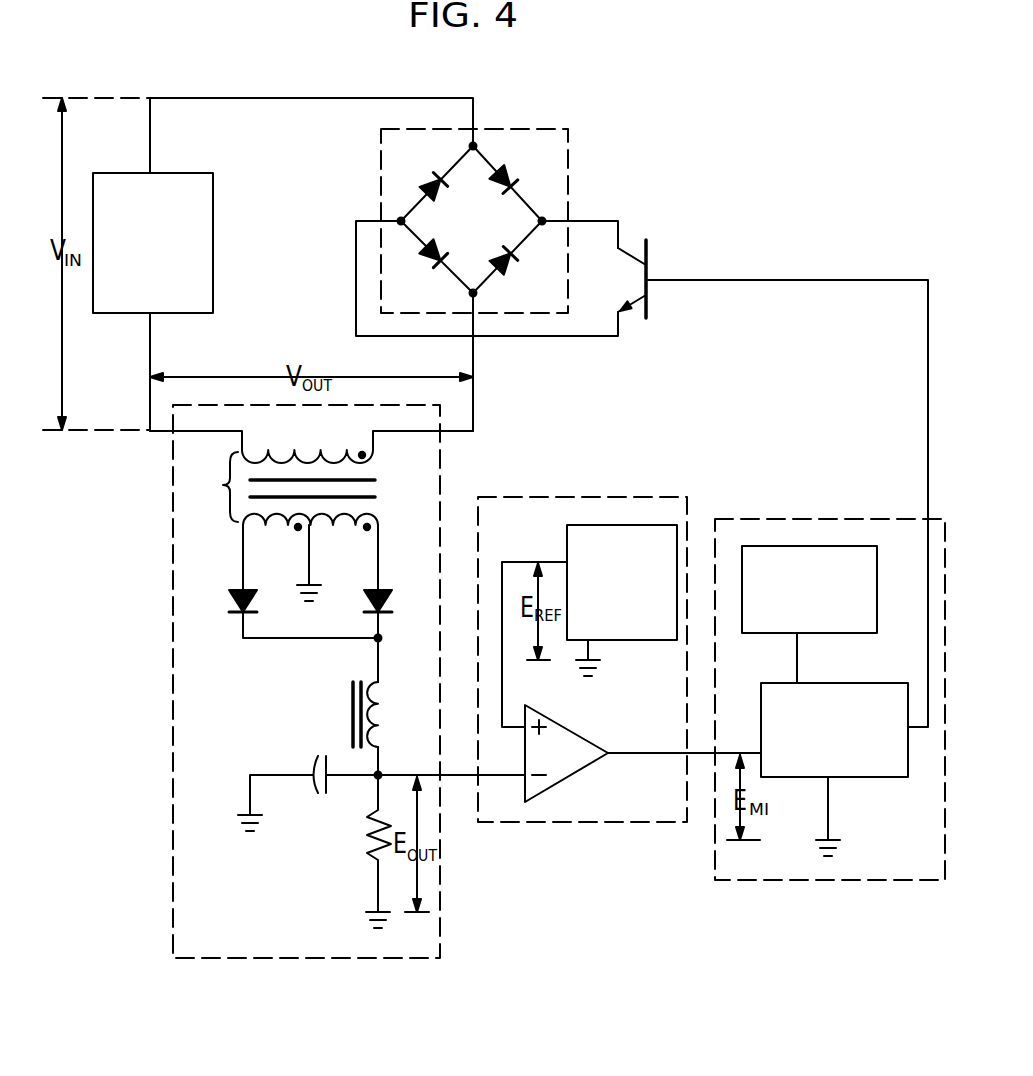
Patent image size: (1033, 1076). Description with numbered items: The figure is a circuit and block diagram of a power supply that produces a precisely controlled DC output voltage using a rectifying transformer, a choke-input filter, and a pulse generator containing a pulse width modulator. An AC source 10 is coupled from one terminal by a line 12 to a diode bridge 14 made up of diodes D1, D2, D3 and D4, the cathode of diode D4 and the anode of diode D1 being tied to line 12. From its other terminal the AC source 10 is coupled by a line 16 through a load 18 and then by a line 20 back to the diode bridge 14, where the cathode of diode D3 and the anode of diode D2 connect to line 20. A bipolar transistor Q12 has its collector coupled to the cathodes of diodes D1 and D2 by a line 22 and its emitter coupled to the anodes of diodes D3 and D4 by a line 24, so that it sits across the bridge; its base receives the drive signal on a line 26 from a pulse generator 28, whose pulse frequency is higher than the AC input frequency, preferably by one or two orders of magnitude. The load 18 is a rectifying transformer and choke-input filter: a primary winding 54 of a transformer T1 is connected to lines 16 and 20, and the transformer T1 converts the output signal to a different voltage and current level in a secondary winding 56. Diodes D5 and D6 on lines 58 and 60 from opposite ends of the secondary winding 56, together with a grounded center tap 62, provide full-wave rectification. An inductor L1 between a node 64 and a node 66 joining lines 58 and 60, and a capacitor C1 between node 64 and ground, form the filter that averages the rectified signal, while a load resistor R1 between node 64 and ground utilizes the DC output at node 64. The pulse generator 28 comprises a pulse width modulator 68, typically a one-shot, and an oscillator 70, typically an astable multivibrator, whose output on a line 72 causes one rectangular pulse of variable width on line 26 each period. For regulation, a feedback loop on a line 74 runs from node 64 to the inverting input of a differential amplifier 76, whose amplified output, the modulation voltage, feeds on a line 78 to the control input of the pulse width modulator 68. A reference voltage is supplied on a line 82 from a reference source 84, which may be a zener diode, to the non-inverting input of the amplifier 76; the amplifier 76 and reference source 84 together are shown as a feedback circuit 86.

The AC source 10 is at (153, 243).
The line 12 is at (150, 134).
The diode bridge 14 is at (474, 189).
The line 16 is at (152, 346).
The load 18 is at (172, 522).
The line 20 is at (474, 358).
The line 22 is at (612, 218).
The line 24 is at (598, 337).
The line 26 is at (755, 278).
The pulse generator 28 is at (818, 517).
The primary winding 54 is at (273, 462).
The secondary winding 56 is at (380, 521).
The line 58 is at (246, 631).
The line 60 is at (377, 625).
The center tap 62 is at (309, 556).
The node 64 is at (382, 772).
The node 66 is at (381, 639).
The pulse width modulator 68 is at (834, 769).
The oscillator 70 is at (809, 589).
The line 72 is at (797, 662).
The line 74 is at (464, 780).
The differential amplifier 76 is at (575, 776).
The line 78 is at (703, 757).
The line 82 is at (512, 561).
The reference source 84 is at (622, 600).
The feedback circuit 86 is at (589, 496).
The bipolar transistor Q12 is at (645, 280).
The diode D1 is at (517, 172).
The diode D2 is at (522, 256).
The diode D3 is at (428, 262).
The diode D4 is at (436, 165).
The diode D5 is at (232, 597).
The diode D6 is at (392, 601).
The transformer T1 is at (311, 470).
The inductor L1 is at (351, 703).
The capacitor C1 is at (313, 760).
The load resistor R1 is at (370, 838).